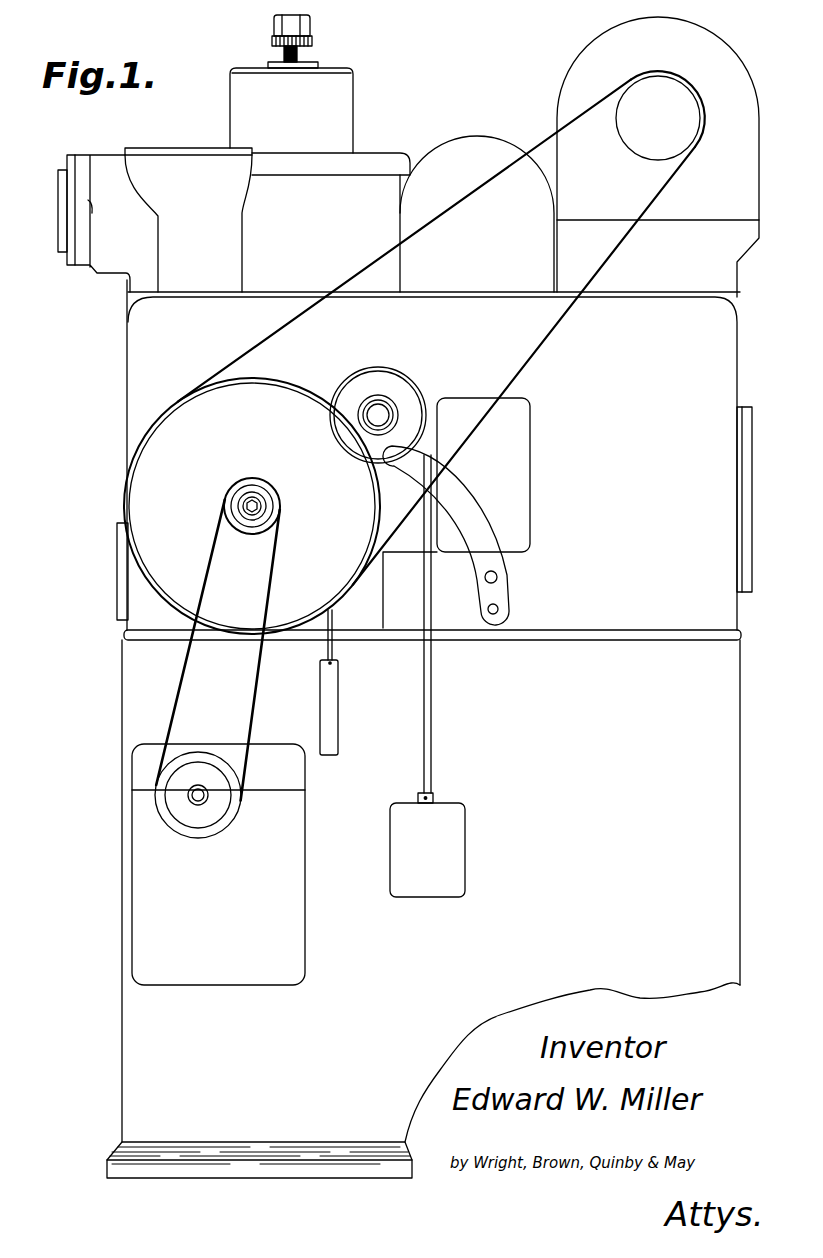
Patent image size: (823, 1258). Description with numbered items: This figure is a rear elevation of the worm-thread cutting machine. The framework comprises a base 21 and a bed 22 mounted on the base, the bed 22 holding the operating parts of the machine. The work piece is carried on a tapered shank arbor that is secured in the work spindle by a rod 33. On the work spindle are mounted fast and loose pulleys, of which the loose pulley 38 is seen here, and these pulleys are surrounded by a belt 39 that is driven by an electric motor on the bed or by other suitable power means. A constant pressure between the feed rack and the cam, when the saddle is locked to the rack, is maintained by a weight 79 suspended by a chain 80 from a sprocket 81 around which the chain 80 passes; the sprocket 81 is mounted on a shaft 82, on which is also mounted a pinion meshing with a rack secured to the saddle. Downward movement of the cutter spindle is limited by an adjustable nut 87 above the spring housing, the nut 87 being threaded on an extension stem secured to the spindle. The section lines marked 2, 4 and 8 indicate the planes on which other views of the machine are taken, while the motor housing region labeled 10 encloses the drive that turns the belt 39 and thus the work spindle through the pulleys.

The section line 2- 2 is at (175, 28).
The section line 4- 4 is at (416, 935).
The section line 8- 8 is at (37, 200).
The motor housing 10 is at (595, 58).
The base 21 is at (143, 681).
The bed 22 is at (707, 605).
The rod 33 is at (262, 500).
The loose pulley 38 is at (150, 501).
The belt 39 is at (543, 341).
The weight 79 is at (453, 862).
The chain 80 is at (427, 707).
The sprocket 81 is at (392, 385).
The shaft 82 is at (385, 413).
The adjustable nut 87 is at (312, 40).